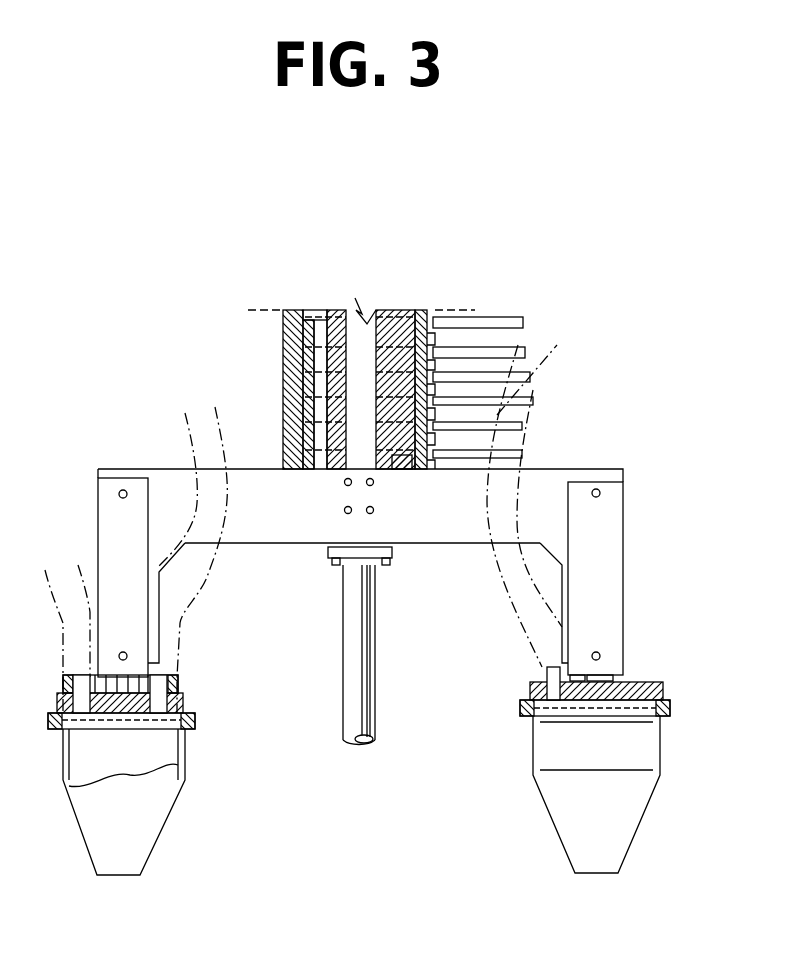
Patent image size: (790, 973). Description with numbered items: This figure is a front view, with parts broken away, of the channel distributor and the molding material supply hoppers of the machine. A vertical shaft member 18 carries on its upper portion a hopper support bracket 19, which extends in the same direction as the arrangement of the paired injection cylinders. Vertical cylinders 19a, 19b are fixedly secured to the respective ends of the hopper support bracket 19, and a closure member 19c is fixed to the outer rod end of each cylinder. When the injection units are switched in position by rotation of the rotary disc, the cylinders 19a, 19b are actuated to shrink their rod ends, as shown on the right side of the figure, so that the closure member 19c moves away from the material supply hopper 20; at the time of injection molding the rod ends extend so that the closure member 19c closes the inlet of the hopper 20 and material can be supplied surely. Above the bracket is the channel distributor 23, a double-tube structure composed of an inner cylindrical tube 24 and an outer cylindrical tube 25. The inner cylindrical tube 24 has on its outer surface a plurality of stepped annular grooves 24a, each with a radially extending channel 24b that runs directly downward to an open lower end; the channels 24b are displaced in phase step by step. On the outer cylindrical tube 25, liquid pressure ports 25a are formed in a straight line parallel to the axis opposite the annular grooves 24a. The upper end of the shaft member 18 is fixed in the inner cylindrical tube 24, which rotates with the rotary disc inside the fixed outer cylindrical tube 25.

The shaft member 18 is at (365, 620).
The hopper support bracket 19 is at (267, 530).
The vertical cylinder 19a is at (110, 532).
The vertical cylinder 19b is at (608, 525).
The closure member 19c is at (195, 716).
The material supply hopper 20 is at (140, 822).
The channel distributor 23 is at (413, 310).
The inner cylindrical tube 24 is at (322, 310).
The annular groove 24a is at (390, 312).
The channel 24b is at (308, 310).
The outer cylindrical tube 25 is at (293, 377).
The liquid pressure port 25a is at (443, 350).